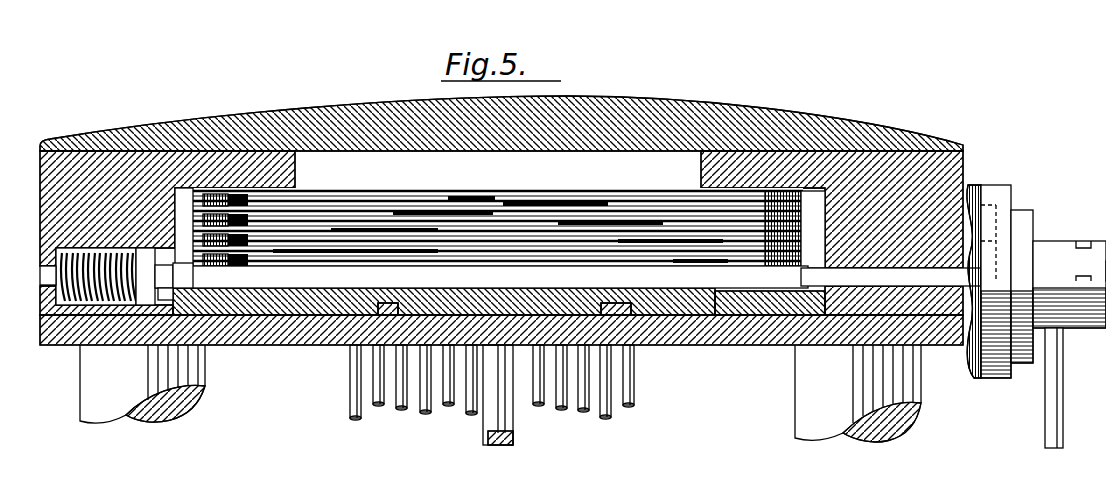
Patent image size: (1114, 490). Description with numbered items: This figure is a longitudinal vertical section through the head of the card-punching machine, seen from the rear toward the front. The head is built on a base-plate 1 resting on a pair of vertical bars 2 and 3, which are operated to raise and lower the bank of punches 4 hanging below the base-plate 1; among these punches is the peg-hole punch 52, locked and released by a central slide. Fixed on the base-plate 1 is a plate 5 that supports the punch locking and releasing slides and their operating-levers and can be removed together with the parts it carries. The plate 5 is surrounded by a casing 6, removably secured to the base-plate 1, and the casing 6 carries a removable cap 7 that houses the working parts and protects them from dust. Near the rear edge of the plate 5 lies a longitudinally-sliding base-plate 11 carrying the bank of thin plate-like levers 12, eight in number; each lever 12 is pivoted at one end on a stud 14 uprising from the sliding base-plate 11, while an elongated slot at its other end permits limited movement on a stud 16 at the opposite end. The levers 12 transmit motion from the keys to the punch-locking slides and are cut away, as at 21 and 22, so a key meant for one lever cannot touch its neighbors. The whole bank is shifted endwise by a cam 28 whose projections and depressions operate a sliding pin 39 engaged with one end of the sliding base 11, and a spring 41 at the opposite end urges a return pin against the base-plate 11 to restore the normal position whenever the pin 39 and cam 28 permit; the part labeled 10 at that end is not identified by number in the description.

The base-plate 1 is at (258, 327).
The vertical bar 2 is at (78, 365).
The vertical bar 3 is at (900, 385).
The punches 4 is at (620, 368).
The plate 5 is at (757, 294).
The casing 6 is at (940, 175).
The cap 7 is at (683, 110).
The push rod 10 is at (38, 263).
The sliding base-plate 11 is at (332, 266).
The lever 12 is at (373, 184).
The stud 14 is at (207, 183).
The stud 16 is at (766, 181).
The cut-away portion 21 is at (458, 190).
The cut-away portion 22 is at (512, 196).
The cam 28 is at (983, 362).
The sliding pin 39 is at (858, 268).
The spring 41 is at (33, 287).
The peg-hole punch 52 is at (500, 425).